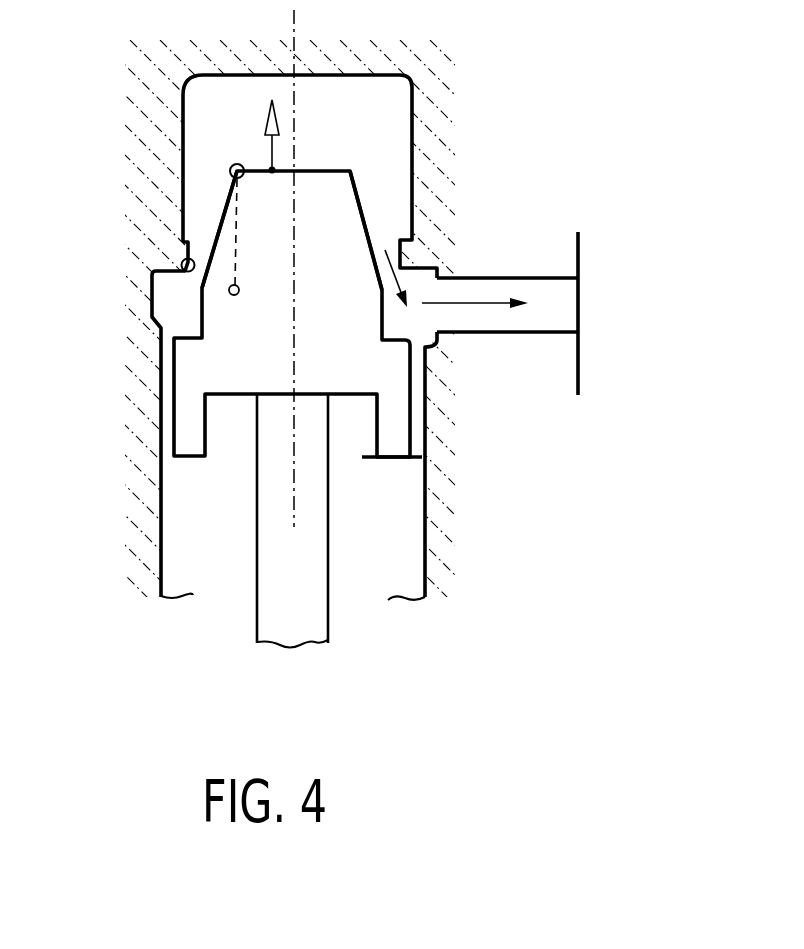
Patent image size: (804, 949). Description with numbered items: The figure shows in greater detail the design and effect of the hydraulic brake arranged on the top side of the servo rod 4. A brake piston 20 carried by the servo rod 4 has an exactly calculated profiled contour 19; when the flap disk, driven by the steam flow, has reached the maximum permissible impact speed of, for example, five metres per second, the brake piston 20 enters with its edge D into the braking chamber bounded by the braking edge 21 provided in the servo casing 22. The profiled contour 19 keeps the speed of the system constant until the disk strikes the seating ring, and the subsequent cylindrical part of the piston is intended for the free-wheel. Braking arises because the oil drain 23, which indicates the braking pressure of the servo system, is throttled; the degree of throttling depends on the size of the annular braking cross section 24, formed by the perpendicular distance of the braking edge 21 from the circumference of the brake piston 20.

The servo rod 4 is at (287, 608).
The profiled contour 19 is at (363, 200).
The brake piston 20 is at (333, 240).
The braking edge 21 is at (181, 267).
The housing 22 is at (387, 108).
The oil drain 23 is at (523, 303).
The annular braking cross section 24 is at (202, 277).